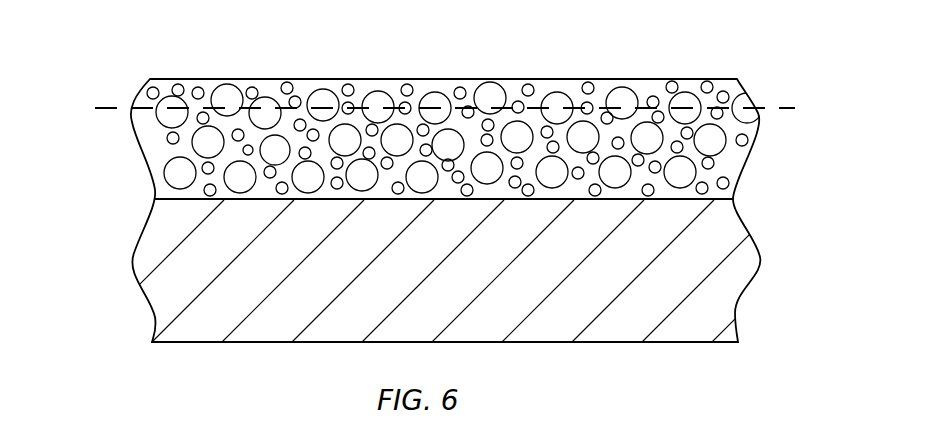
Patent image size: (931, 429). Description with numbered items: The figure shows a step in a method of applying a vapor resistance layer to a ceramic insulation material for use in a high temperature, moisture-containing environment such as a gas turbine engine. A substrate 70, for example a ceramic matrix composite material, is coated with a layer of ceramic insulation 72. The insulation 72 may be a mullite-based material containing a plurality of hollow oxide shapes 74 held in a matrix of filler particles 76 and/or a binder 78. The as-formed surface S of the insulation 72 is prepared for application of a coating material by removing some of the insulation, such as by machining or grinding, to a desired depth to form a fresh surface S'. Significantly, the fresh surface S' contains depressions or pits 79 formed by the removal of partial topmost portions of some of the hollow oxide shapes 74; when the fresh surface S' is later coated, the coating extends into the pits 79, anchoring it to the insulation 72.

The substrate 70 is at (131, 256).
The layer of ceramic insulation 72 is at (152, 137).
The binder 78 is at (157, 160).
The hollow oxide shapes 74 is at (620, 97).
The filler particles 76 is at (743, 143).
The pits 79 is at (264, 118).
The as-formed surface S is at (418, 54).
The fresh surface S' is at (425, 87).